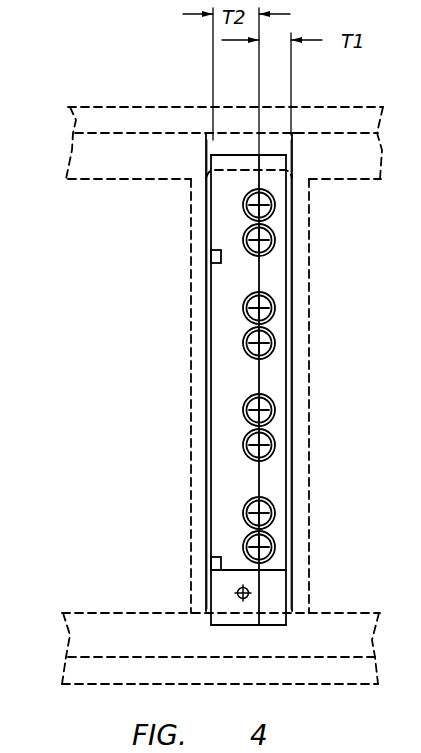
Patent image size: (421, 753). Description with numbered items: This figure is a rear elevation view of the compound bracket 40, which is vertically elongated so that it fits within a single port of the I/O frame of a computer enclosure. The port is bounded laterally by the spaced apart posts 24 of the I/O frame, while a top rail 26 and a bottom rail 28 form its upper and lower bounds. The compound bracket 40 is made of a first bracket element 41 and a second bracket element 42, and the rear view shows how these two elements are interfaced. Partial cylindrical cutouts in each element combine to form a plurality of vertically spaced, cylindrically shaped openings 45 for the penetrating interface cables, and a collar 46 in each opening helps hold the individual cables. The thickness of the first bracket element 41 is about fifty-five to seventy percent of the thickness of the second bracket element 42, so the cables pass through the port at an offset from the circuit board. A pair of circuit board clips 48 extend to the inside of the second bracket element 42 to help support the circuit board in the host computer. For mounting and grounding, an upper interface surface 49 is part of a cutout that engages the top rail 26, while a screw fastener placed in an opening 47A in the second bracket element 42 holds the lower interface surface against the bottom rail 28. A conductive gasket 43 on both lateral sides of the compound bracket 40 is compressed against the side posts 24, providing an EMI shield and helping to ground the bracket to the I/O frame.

The posts 24 is at (188, 436).
The top rail 26 is at (300, 105).
The bottom rail 28 is at (335, 612).
The compound bracket 40 is at (186, 222).
The first bracket element 41 is at (289, 303).
The second bracket element 42 is at (203, 377).
The conductive gasket 43 is at (191, 333).
The cylindrically shaped openings 45 is at (248, 508).
The collar 46 is at (266, 540).
The opening 47A is at (243, 599).
The circuit board clips 48 is at (211, 256).
The upper interface surface 49 is at (235, 165).